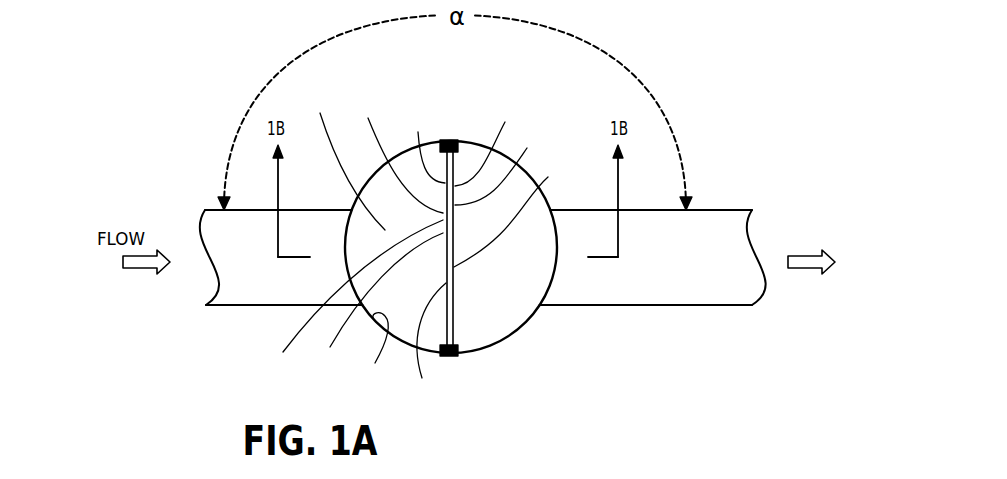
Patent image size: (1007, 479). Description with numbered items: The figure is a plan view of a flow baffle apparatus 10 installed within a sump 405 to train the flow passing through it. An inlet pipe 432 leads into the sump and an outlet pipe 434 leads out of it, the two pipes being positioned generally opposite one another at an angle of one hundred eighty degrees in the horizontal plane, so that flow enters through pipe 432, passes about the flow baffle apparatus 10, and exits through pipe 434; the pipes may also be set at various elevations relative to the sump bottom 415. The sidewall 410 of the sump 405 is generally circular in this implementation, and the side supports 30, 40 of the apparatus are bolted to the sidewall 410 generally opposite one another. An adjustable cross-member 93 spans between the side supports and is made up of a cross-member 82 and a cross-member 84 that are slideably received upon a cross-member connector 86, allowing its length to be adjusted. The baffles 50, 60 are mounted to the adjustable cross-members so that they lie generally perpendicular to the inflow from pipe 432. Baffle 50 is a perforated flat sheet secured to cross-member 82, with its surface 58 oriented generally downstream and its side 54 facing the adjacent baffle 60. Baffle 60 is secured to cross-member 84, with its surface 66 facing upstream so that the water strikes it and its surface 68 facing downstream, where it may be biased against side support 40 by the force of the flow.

The flow baffle apparatus 10 is at (680, 66).
The side support 30 is at (458, 150).
The side support 40 is at (462, 349).
The baffle 50 is at (501, 167).
The side of baffle 50 54 is at (423, 144).
The surface of baffle 50 58 is at (486, 143).
The baffle 60 is at (512, 214).
The surface of baffle 60 66 is at (446, 283).
The surface of baffle 60 68 is at (455, 283).
The cross-member 82 is at (399, 155).
The cross-member 84 is at (431, 344).
The cross-member connector 86 is at (381, 299).
The adjustable cross-member 93 is at (355, 298).
The sump 405 is at (507, 325).
The sidewall 410 is at (373, 352).
The sump bottom 415 is at (345, 160).
The pipe 432 is at (245, 306).
The pipe 434 is at (698, 306).